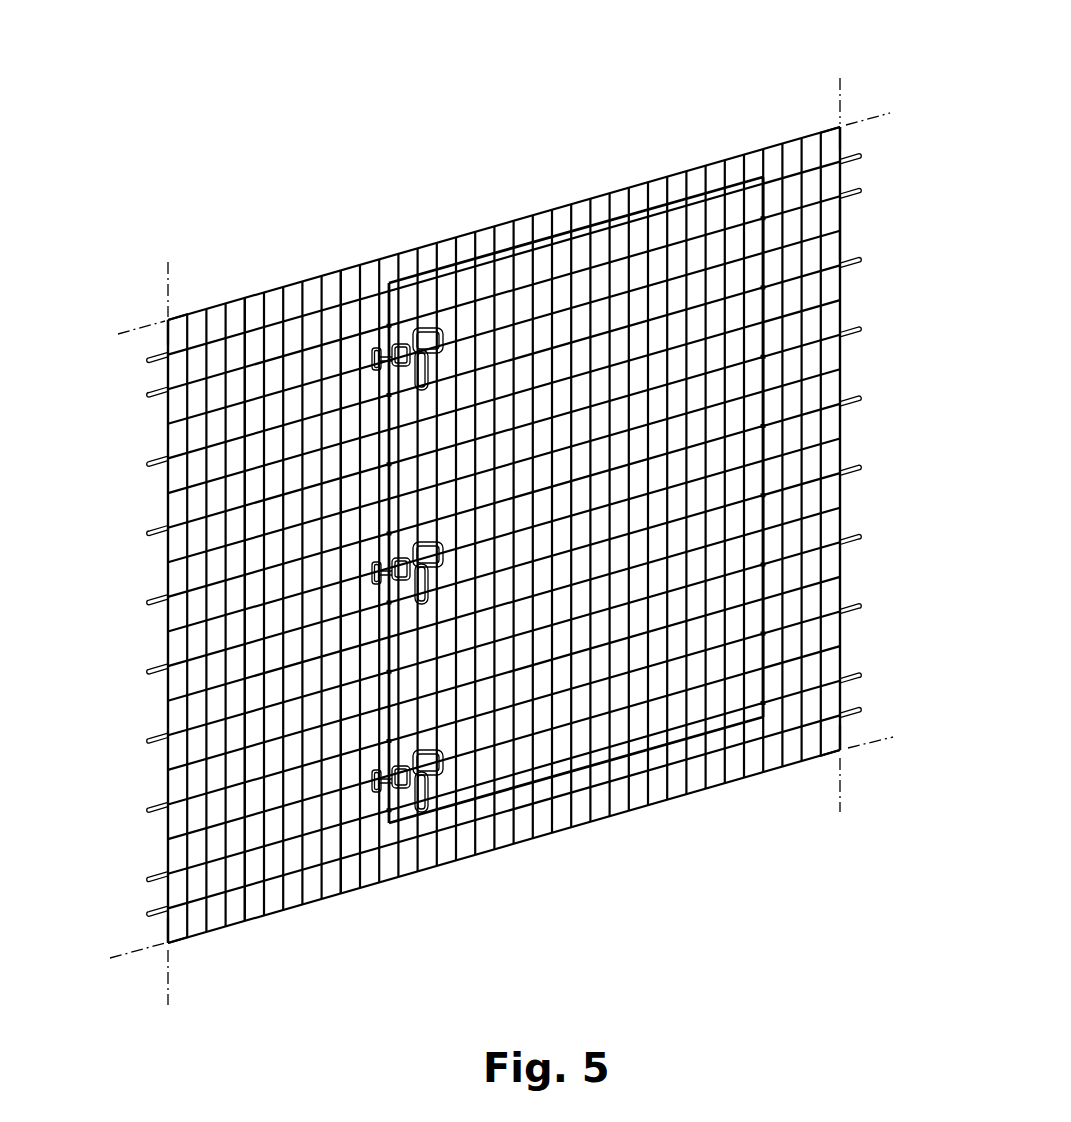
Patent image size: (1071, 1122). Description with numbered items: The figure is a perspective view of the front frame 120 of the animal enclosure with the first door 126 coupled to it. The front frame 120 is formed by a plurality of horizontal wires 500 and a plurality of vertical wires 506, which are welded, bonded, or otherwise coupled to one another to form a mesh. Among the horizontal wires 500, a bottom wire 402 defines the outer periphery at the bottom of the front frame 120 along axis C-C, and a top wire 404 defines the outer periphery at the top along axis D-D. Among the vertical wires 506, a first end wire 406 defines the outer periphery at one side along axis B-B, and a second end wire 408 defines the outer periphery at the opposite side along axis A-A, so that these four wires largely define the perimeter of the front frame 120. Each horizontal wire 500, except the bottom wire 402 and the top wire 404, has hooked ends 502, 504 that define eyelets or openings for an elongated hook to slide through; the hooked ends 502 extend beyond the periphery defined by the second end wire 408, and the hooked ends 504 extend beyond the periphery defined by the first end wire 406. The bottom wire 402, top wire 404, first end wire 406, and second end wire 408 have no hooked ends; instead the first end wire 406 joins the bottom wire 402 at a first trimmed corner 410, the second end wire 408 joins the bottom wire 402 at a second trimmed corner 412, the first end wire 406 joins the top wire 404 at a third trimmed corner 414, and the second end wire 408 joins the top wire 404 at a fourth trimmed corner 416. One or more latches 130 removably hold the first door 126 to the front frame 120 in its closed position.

The front frame 120 is at (258, 340).
The first door 126 is at (712, 512).
The latch 130 is at (446, 372).
The bottom wire 402 is at (676, 798).
The top wire 404 is at (620, 190).
The first end wire 406 is at (165, 568).
The second end wire 408 is at (858, 400).
The first trimmed corner 410 is at (166, 945).
The second trimmed corner 412 is at (843, 753).
The third trimmed corner 414 is at (167, 318).
The fourth trimmed corner 416 is at (845, 111).
The horizontal wires 500 is at (840, 250).
The hooked ends 502 is at (861, 191).
The hooked ends 504 is at (147, 534).
The vertical wires 506 is at (333, 897).